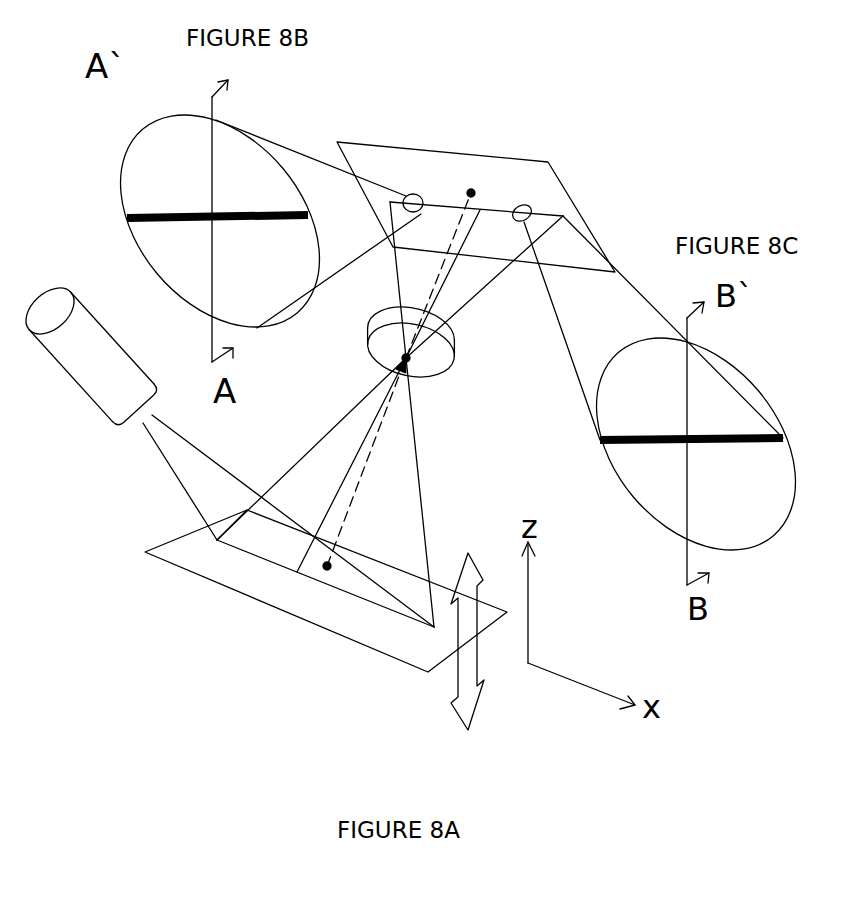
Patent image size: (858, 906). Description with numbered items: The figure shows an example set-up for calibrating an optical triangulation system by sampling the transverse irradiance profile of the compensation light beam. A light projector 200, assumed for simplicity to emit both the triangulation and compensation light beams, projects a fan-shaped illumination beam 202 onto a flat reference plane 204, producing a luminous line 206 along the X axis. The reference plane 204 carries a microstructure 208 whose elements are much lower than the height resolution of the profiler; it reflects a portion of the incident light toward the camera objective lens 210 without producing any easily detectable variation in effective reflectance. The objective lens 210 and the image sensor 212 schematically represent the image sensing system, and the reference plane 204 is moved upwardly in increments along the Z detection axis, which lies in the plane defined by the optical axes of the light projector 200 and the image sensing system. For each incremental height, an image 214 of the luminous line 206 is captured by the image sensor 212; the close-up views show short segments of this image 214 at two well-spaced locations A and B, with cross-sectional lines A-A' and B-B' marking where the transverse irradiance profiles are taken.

In FIG. 8A, the light projector 200 is at (107, 400).
In FIG. 8A, the illumination beam 202 is at (177, 482).
In FIG. 8A, the reference plane 204 is at (348, 628).
In FIG. 8A, the luminous line 206 is at (255, 560).
In FIG. 8A, the microstructure 208 is at (333, 552).
In FIG. 8A, the camera objective lens 210 is at (456, 352).
In FIG. 8A, the image sensor 212 is at (527, 190).
In FIG. 8A, the image of the luminous line 214 is at (438, 203).
In FIG. 8B, the image of the luminous line 214 is at (133, 213).
In FIG. 8C, the image of the luminous line 214 is at (743, 435).